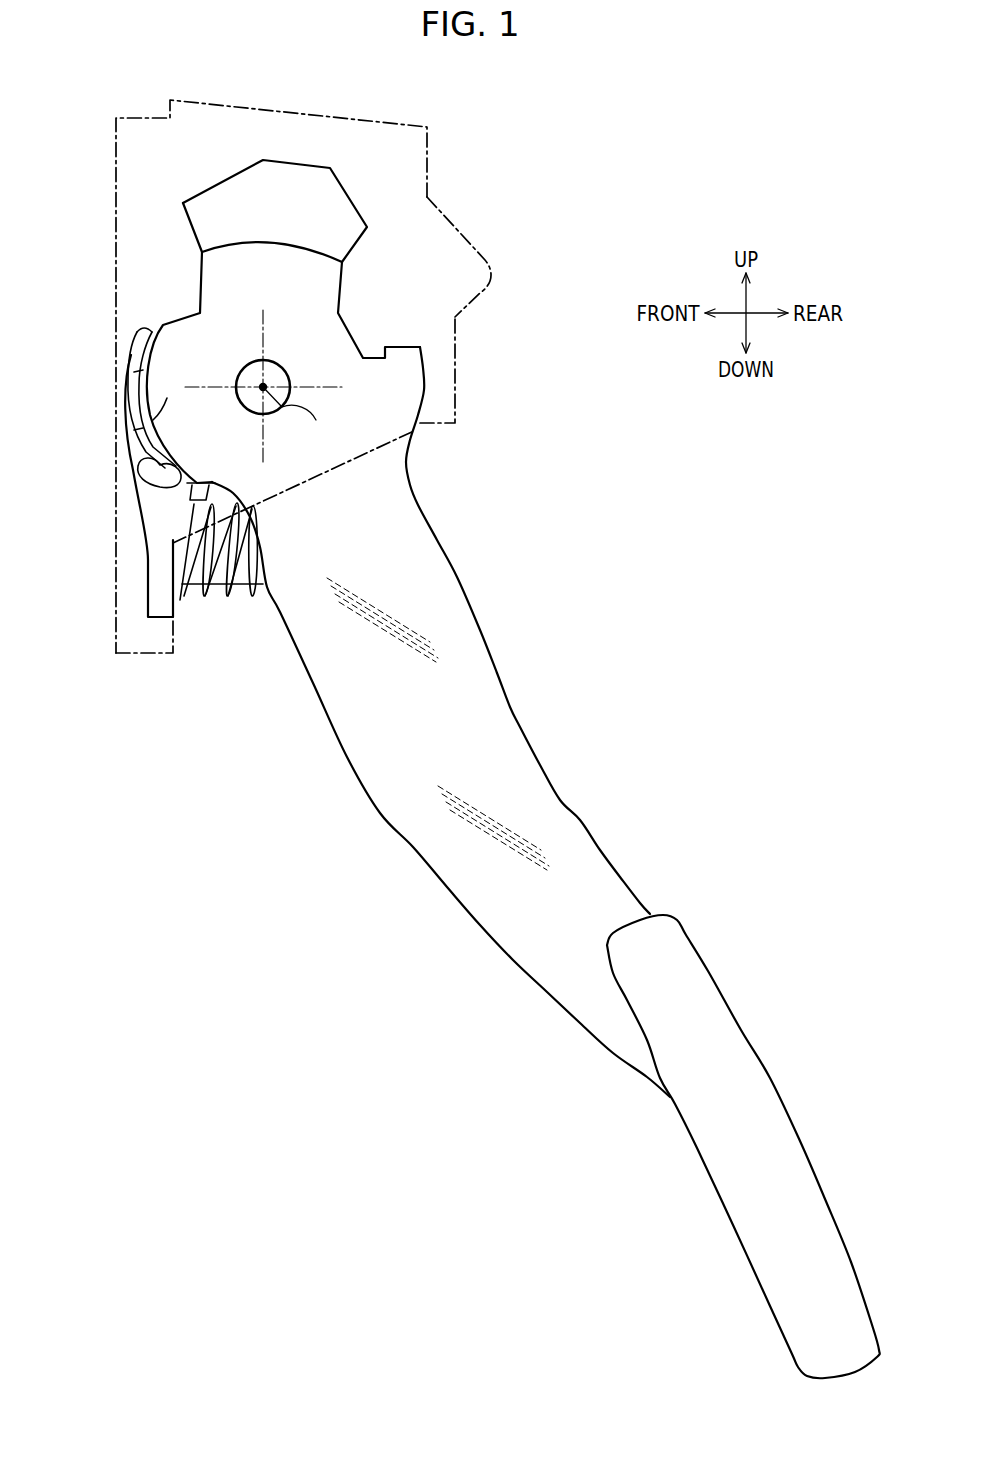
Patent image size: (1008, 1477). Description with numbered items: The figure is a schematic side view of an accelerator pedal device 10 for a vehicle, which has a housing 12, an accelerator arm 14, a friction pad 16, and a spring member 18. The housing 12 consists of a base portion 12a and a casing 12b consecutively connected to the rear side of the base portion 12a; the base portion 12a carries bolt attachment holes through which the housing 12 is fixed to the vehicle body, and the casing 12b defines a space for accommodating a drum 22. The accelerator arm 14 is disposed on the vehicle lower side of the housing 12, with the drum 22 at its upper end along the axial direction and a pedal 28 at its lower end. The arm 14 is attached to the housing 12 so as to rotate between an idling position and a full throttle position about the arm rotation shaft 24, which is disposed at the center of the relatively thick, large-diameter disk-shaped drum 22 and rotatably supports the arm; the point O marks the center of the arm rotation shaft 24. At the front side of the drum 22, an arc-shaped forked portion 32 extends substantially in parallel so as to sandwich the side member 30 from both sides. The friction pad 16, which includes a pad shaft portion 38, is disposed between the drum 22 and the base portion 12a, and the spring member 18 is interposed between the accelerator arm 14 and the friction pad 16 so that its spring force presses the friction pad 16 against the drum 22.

The accelerator pedal device 10 is at (464, 769).
The housing 12 is at (321, 413).
The base portion 12a is at (150, 658).
The casing 12b is at (438, 211).
The accelerator arm 14 is at (519, 689).
The friction pad 16 is at (133, 522).
The spring member 18 is at (233, 617).
The drum 22 is at (181, 286).
The arm rotation shaft 24 is at (240, 372).
The pedal 28 is at (792, 1078).
The side member 30 is at (130, 367).
The forked portion 32 is at (145, 410).
The pad shaft portion 38 is at (147, 468).